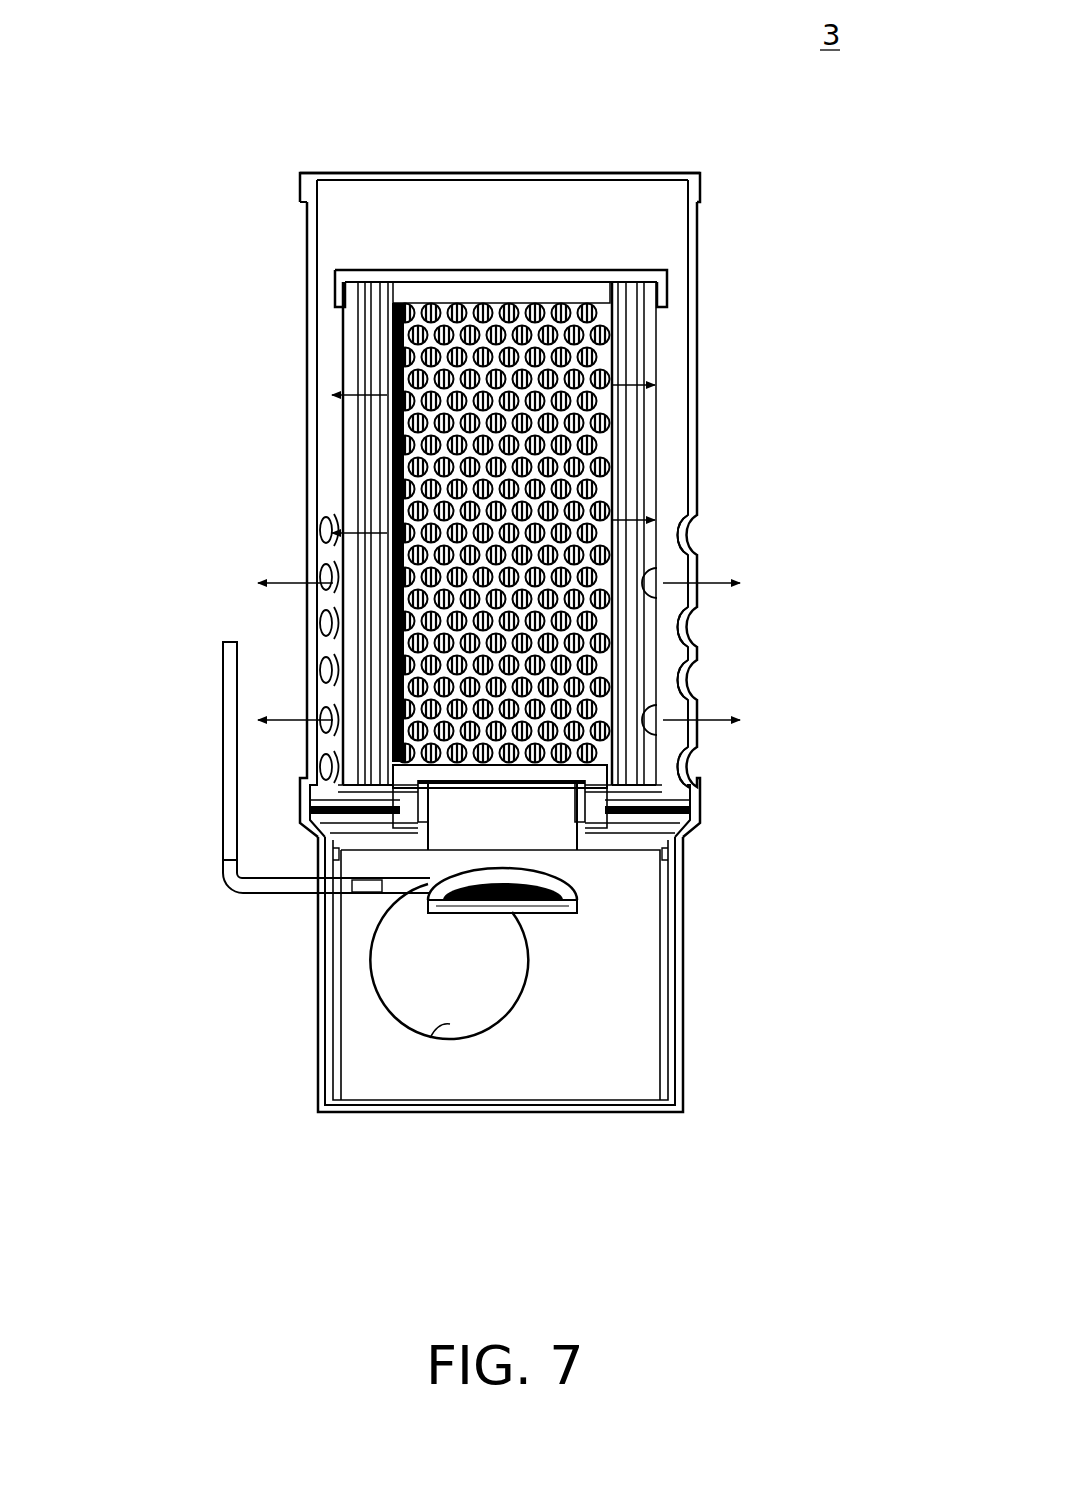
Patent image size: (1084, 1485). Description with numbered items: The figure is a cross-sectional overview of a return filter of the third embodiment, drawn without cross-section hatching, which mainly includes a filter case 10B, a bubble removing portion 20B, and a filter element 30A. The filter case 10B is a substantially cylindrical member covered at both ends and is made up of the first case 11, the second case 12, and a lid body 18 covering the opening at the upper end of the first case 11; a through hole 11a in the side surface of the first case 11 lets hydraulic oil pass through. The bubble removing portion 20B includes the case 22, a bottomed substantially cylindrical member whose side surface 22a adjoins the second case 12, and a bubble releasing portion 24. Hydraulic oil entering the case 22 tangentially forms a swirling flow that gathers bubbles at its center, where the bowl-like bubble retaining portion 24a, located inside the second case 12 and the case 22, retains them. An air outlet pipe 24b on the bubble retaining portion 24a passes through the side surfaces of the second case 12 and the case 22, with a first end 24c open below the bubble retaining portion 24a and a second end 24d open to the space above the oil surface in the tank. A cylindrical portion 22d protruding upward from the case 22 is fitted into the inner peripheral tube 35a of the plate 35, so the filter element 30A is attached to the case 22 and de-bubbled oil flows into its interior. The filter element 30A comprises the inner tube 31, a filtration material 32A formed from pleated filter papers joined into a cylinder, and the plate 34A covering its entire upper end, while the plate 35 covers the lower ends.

The filter case 10B is at (835, 412).
The first case 11 is at (688, 365).
The through hole 11a is at (698, 535).
The second case 12 is at (688, 893).
The lid body 18 is at (661, 183).
The bubble removing portion 20B is at (462, 917).
The case 22 is at (330, 1072).
The side surface 22a is at (463, 1023).
The cylindrical portion 22d is at (580, 806).
The bubble releasing portion 24 is at (341, 843).
The bubble retaining portion 24a is at (452, 886).
The air outlet pipe 24b is at (268, 890).
The first end 24c is at (495, 905).
The second end 24d is at (220, 634).
The filter element 30A is at (366, 549).
The inner tube 31 is at (405, 370).
The filtration material 32A is at (385, 428).
The plate 34A is at (345, 282).
The plate 35 is at (368, 770).
The inner peripheral tube 35a is at (390, 718).